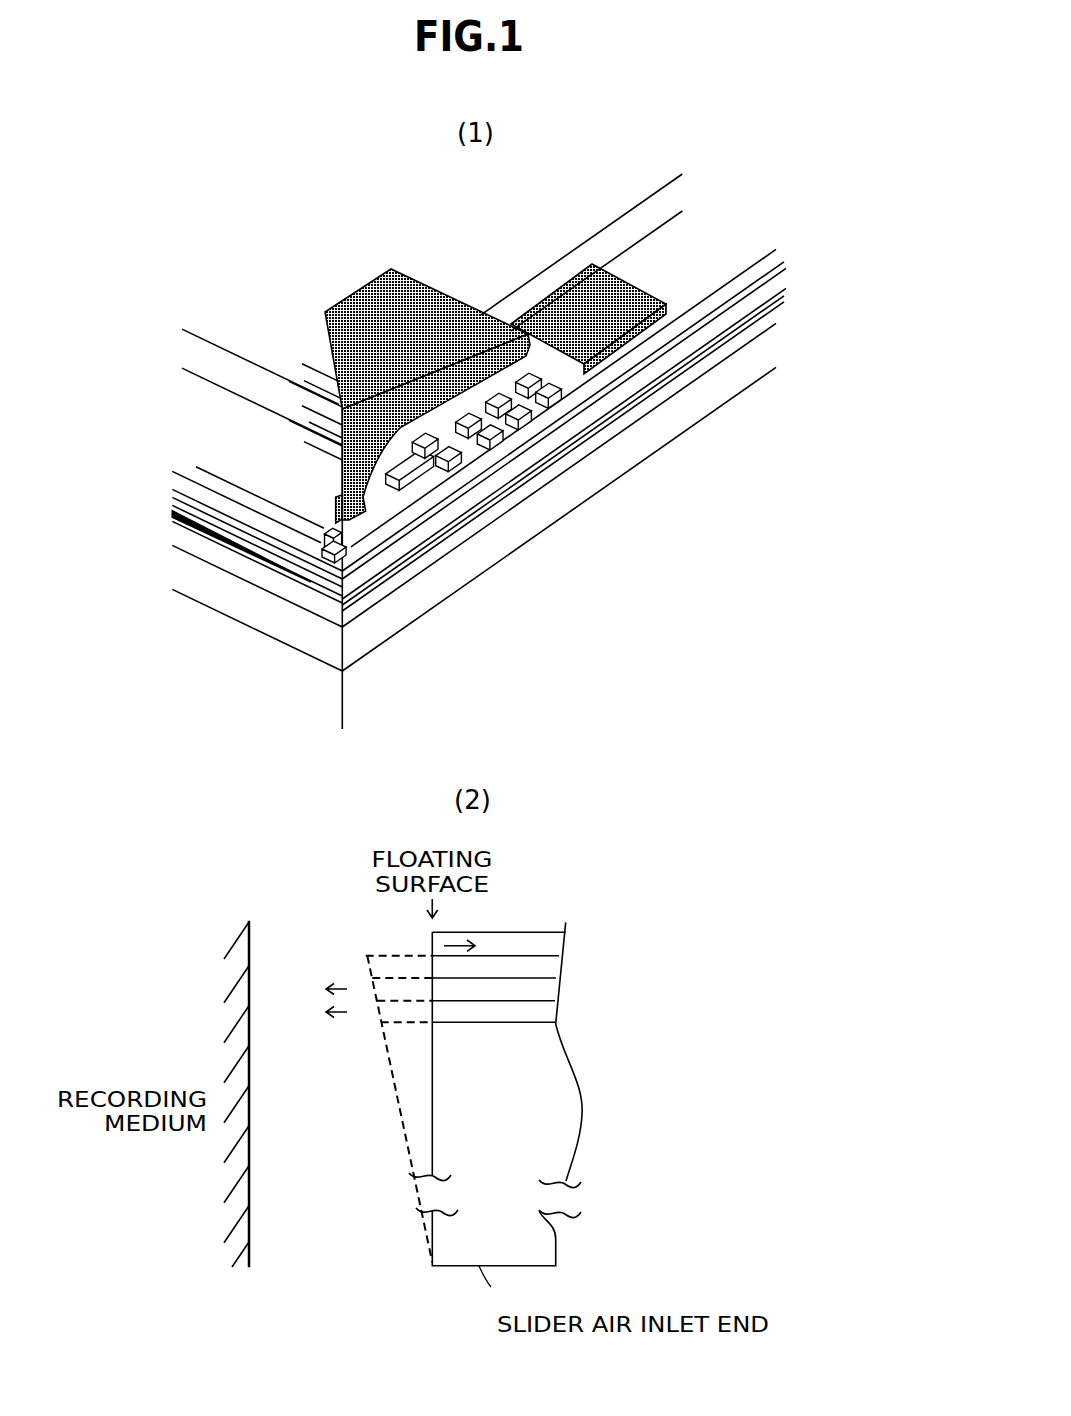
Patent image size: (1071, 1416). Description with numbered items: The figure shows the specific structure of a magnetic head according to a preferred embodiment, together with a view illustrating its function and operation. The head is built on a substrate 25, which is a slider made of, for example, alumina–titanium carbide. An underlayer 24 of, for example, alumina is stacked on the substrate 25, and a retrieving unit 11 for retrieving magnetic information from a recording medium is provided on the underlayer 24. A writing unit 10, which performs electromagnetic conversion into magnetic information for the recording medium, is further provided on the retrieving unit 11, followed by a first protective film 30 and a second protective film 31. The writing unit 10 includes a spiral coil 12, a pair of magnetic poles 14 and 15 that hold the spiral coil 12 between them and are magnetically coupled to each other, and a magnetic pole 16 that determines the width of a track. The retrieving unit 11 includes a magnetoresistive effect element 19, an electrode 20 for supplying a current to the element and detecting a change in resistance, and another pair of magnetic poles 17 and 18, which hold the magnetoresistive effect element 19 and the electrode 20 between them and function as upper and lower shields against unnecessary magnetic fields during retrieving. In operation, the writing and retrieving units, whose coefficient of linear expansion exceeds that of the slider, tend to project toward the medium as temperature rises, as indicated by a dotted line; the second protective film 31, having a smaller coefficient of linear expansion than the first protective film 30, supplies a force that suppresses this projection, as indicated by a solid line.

The writing unit 10 is at (151, 447).
The retrieving unit 11 is at (151, 492).
The spiral coil 12 is at (460, 457).
The magnetic pole 14 is at (360, 291).
The magnetic pole 15 is at (462, 480).
The magnetic pole 16 is at (328, 519).
The magnetic pole 17 is at (452, 513).
The magnetic pole 18 is at (452, 543).
The magnetoresistive effect element 19 is at (317, 593).
The electrode 20 is at (203, 533).
The underlayer 24 is at (743, 373).
The substrate 25 is at (420, 690).
The first protective film 30 is at (690, 252).
The second protective film 31 is at (664, 208).